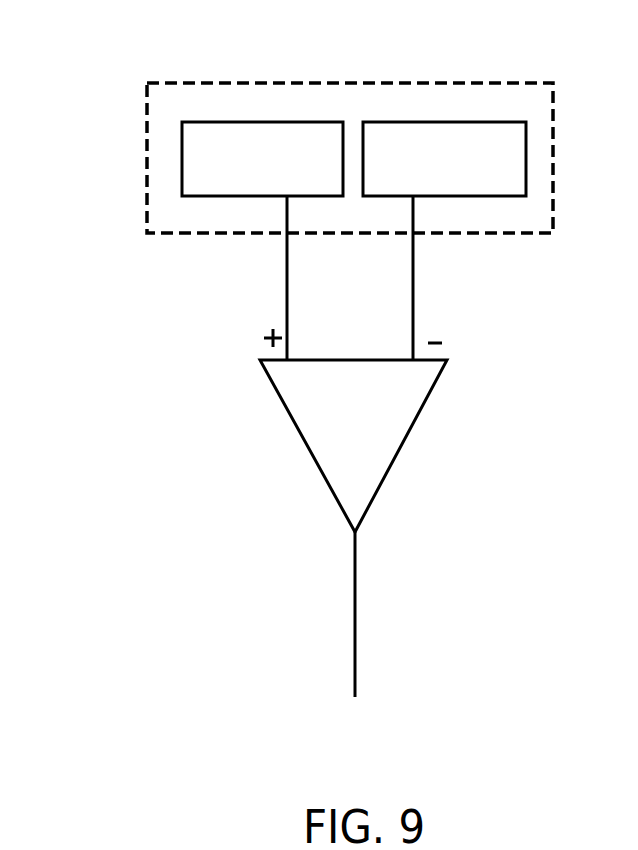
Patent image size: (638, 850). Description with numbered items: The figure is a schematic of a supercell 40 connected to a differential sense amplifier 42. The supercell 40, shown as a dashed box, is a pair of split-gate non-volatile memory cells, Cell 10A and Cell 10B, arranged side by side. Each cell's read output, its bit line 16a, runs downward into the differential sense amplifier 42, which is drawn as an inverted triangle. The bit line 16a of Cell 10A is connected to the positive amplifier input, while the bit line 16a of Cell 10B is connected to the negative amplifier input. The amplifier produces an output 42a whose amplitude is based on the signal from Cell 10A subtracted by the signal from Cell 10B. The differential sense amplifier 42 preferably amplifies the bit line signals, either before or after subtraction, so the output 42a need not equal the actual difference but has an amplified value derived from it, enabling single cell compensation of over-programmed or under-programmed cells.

The supercell 40 is at (147, 118).
The cell 10A is at (290, 175).
The cell 10B is at (472, 175).
The bit line 16a is at (287, 300).
The differential sense amplifier 42 is at (333, 422).
The output 42a is at (355, 612).